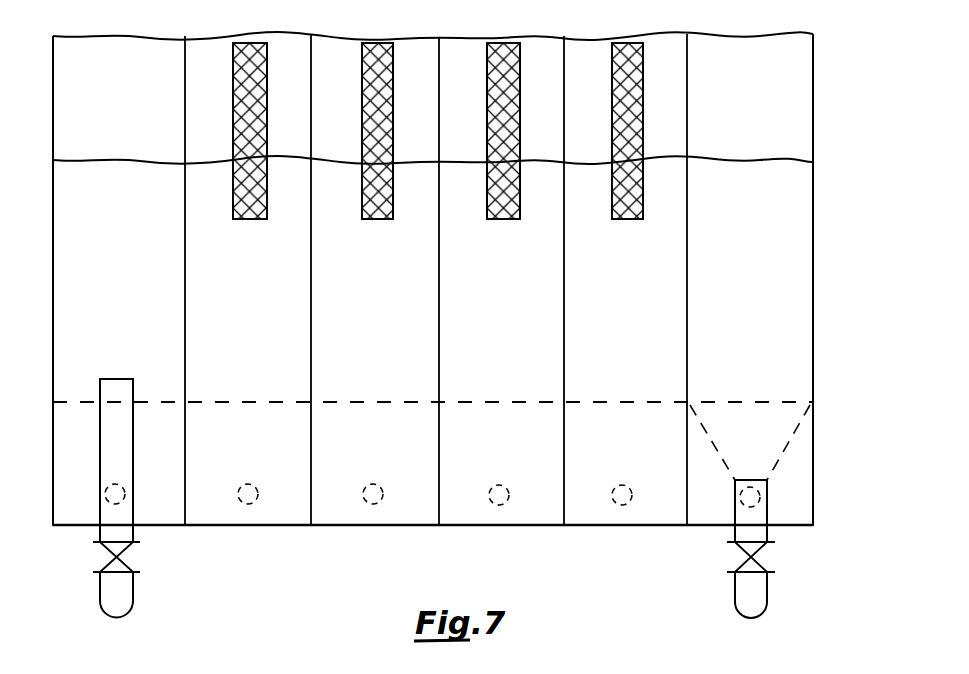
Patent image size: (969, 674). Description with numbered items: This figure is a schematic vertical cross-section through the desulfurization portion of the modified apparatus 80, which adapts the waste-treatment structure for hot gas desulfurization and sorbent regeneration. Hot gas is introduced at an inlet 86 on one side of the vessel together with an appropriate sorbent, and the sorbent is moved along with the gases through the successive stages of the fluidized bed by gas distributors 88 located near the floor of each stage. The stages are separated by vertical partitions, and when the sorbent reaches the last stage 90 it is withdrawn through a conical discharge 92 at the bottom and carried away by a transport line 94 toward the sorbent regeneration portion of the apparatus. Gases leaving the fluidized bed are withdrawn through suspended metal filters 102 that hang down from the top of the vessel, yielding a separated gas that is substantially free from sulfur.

The modified apparatus 80 is at (466, 531).
The hot gas inlet 86 is at (124, 589).
The gas distributors 88 is at (254, 488).
The last stage 90 is at (793, 376).
The conical discharge 92 is at (787, 444).
The transport line 94 is at (768, 597).
The suspended metal filters 102 is at (233, 109).